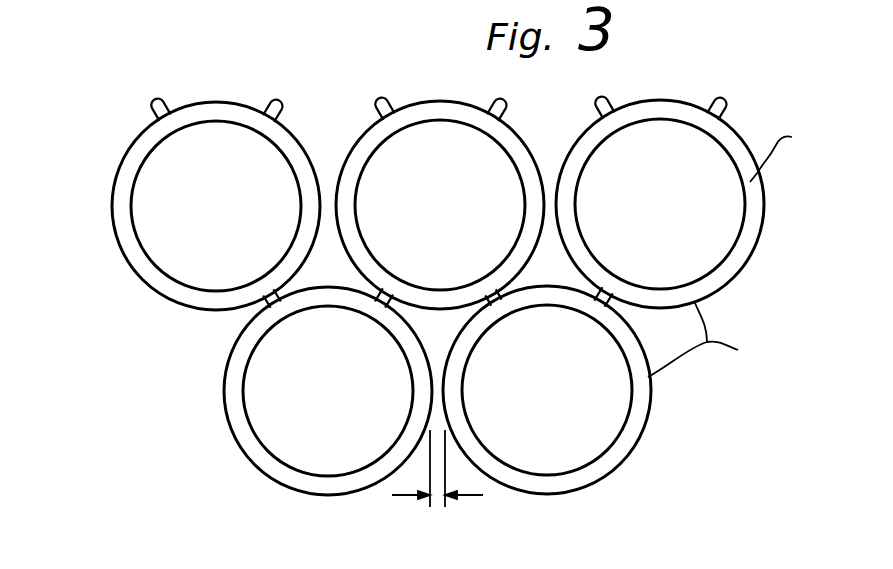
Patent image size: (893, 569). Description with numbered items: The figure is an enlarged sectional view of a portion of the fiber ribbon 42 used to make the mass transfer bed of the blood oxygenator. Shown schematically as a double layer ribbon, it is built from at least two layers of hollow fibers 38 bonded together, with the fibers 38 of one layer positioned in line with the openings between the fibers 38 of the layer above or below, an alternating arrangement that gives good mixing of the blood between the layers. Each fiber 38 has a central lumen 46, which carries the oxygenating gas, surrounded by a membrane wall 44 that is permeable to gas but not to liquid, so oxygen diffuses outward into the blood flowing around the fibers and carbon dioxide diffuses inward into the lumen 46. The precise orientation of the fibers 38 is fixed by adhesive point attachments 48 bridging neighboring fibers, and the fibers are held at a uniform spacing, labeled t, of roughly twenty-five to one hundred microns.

The fiber ribbon 42 is at (428, 317).
The membrane wall 44 is at (785, 154).
The lumen 46 is at (438, 296).
The point attachment 48 is at (510, 284).
The fiber 38 is at (709, 340).